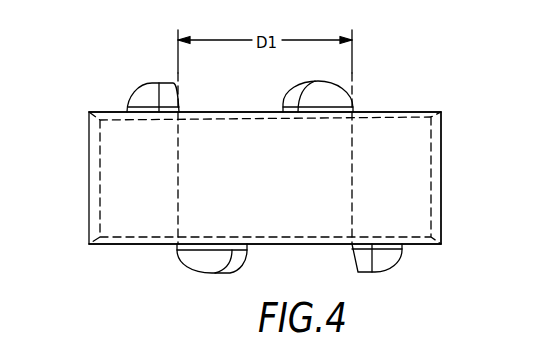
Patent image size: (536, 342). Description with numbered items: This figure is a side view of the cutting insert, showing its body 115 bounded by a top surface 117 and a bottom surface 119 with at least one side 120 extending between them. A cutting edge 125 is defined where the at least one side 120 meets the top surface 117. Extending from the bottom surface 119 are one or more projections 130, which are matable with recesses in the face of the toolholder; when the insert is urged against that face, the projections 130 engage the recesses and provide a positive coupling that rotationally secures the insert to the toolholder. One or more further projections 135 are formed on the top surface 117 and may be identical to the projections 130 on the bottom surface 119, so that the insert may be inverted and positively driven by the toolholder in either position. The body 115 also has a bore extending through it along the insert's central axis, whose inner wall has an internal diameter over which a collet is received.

The body 115 is at (103, 143).
The top surface 117 is at (413, 108).
The bottom surface 119 is at (125, 244).
The side 120 is at (100, 188).
The cutting edge 125 is at (441, 112).
The projections 130 is at (200, 271).
The projections 135 is at (138, 95).